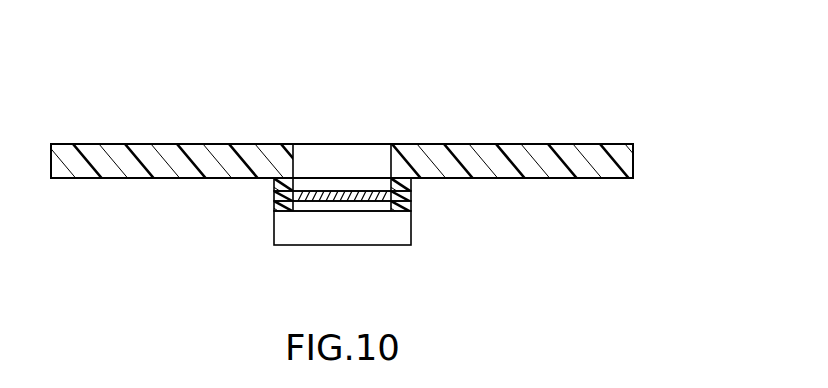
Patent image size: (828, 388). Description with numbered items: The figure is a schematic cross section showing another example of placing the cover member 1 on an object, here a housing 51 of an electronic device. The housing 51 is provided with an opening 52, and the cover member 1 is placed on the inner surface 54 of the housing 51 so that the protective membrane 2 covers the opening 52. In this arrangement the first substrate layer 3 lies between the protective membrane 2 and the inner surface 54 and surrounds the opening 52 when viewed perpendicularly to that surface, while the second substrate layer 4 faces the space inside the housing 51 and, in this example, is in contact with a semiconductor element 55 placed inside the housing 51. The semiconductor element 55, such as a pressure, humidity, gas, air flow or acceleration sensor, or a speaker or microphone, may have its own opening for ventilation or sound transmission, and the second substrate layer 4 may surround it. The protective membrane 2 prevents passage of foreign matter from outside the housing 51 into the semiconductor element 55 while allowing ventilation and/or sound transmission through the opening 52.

The cover member 1 is at (412, 178).
The protective membrane 2 is at (273, 195).
The first substrate layer 3 is at (273, 183).
The second substrate layer 4 is at (273, 207).
The housing 51 is at (618, 154).
The opening 52 is at (356, 160).
The inner surface 54 is at (537, 179).
The semiconductor element 55 is at (343, 236).